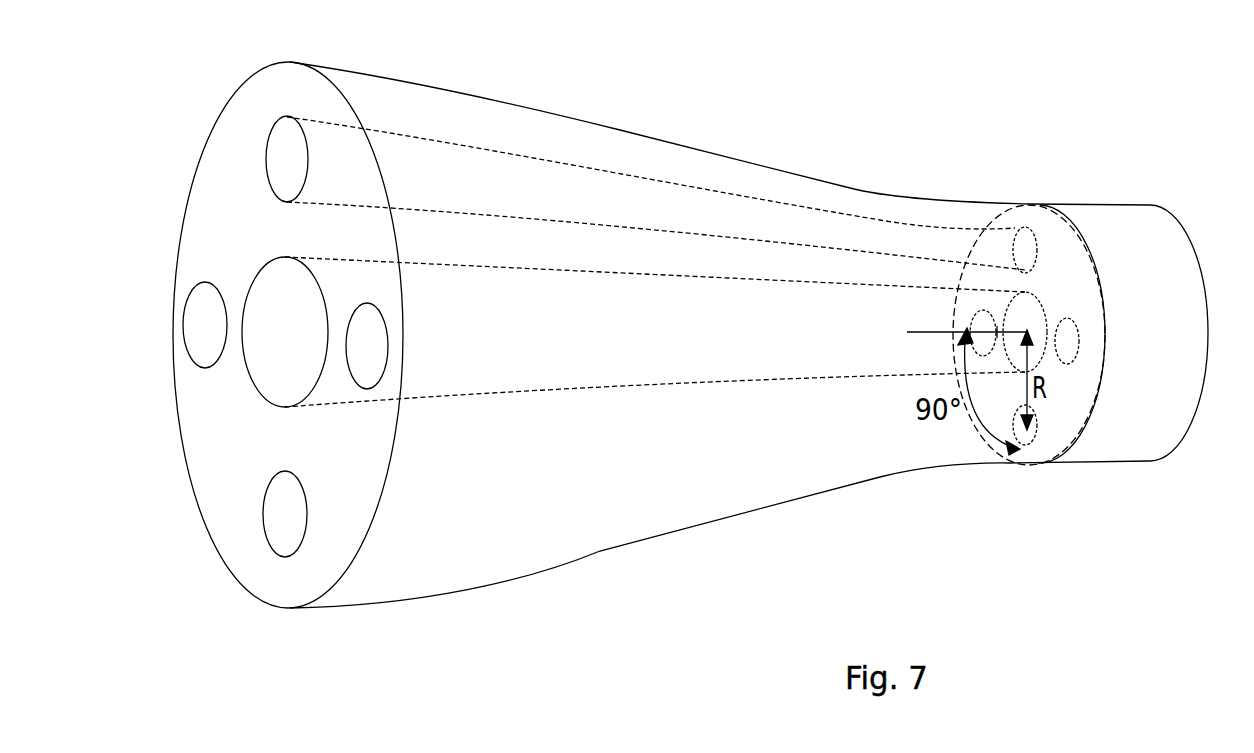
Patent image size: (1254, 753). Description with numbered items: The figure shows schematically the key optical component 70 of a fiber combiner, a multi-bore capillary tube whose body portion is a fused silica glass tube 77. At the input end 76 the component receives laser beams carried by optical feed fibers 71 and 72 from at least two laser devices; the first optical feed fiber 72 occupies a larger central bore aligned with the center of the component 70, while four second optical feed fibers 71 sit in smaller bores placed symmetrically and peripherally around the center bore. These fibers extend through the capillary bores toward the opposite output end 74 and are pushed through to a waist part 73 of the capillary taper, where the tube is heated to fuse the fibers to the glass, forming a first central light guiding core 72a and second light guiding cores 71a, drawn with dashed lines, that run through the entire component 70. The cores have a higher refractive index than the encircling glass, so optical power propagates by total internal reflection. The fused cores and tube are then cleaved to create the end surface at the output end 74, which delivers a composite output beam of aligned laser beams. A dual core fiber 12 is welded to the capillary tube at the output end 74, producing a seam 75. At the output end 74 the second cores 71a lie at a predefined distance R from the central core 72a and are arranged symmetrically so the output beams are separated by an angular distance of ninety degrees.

The dual core fiber 12 is at (1155, 263).
The optical component 70 is at (238, 70).
The second optical feed fibers 71 is at (200, 322).
The second light guiding cores 71a is at (578, 167).
The first optical feed fiber 72 is at (303, 347).
The first central light guiding core 72a is at (800, 375).
The waist part 73 is at (872, 195).
The output end 74 is at (1063, 283).
The seam 75 is at (1103, 300).
The input end 76 is at (230, 462).
The fused silica glass tube 77 is at (638, 440).